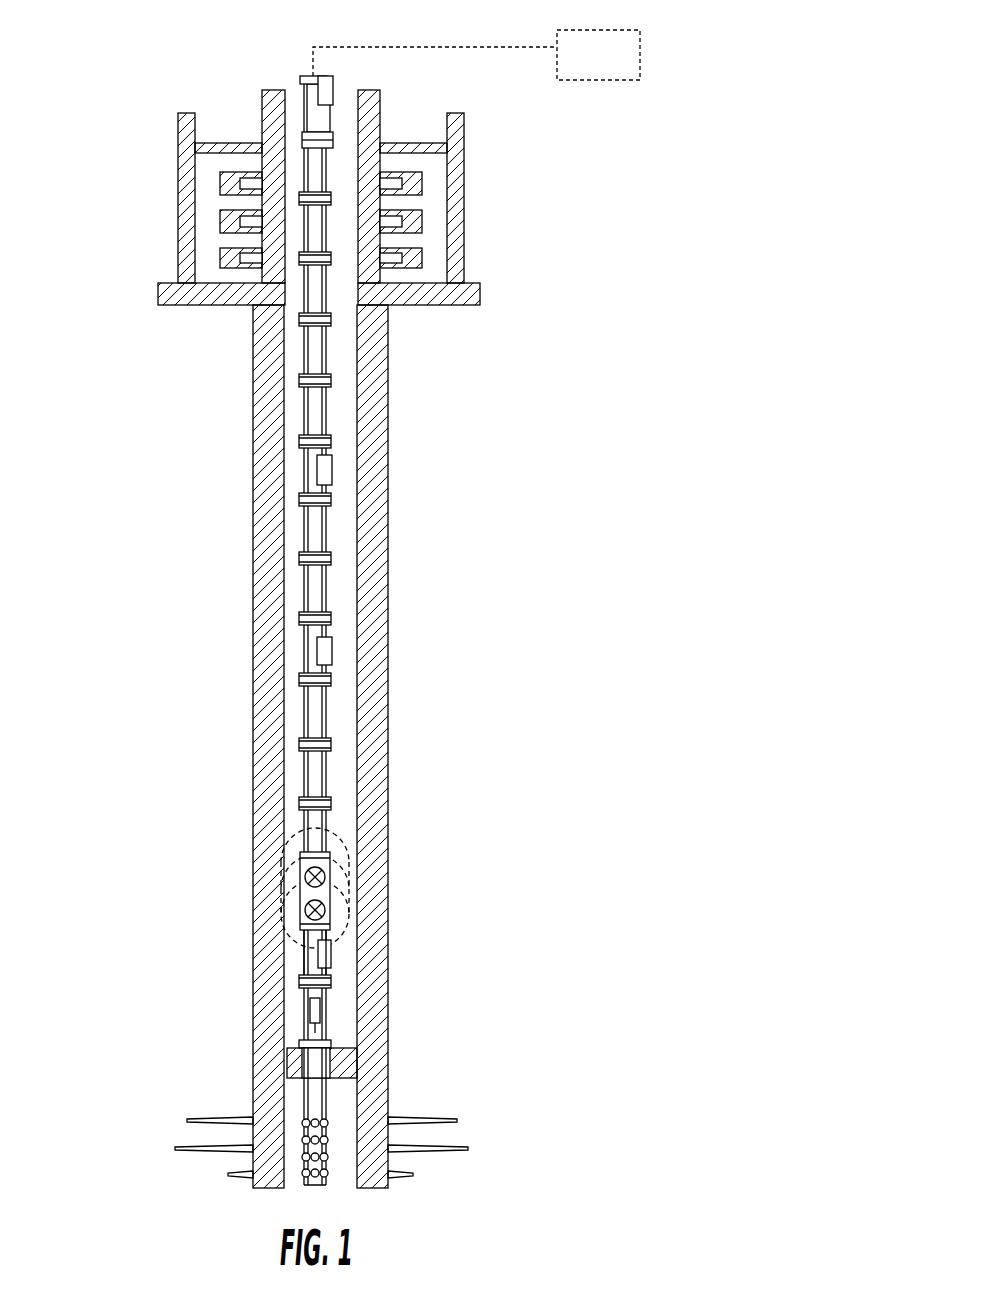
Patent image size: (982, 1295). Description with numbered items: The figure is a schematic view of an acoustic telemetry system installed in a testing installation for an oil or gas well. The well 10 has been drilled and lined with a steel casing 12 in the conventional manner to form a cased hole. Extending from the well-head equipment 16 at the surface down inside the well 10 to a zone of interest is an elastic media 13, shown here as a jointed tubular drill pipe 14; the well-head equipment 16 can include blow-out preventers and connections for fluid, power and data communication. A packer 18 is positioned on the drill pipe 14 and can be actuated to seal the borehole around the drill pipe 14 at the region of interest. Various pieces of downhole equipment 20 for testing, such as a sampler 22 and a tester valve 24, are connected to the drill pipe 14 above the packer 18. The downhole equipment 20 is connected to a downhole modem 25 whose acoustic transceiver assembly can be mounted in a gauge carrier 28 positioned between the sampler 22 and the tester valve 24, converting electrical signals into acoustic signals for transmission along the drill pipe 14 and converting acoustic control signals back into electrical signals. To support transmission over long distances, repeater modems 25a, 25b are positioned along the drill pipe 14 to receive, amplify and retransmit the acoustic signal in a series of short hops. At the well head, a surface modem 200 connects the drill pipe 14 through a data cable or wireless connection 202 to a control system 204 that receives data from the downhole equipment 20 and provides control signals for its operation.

The well 10 is at (343, 746).
The steel casing 12 is at (252, 356).
The elastic media 13 is at (325, 716).
The jointed tubular drill pipe 14 is at (301, 775).
The well-head equipment 16 is at (176, 267).
The packer 18 is at (357, 1062).
The downhole equipment 20 is at (412, 1035).
The sampler 22 is at (300, 1023).
The tester valve 24 is at (298, 898).
The downhole modem 25 is at (312, 963).
The repeater modem 25a is at (301, 650).
The repeater modem 25b is at (301, 470).
The gauge carrier 28 is at (300, 948).
The surface modem 200 is at (299, 88).
The data cable or wireless connection 202 is at (433, 51).
The control system 204 is at (605, 30).